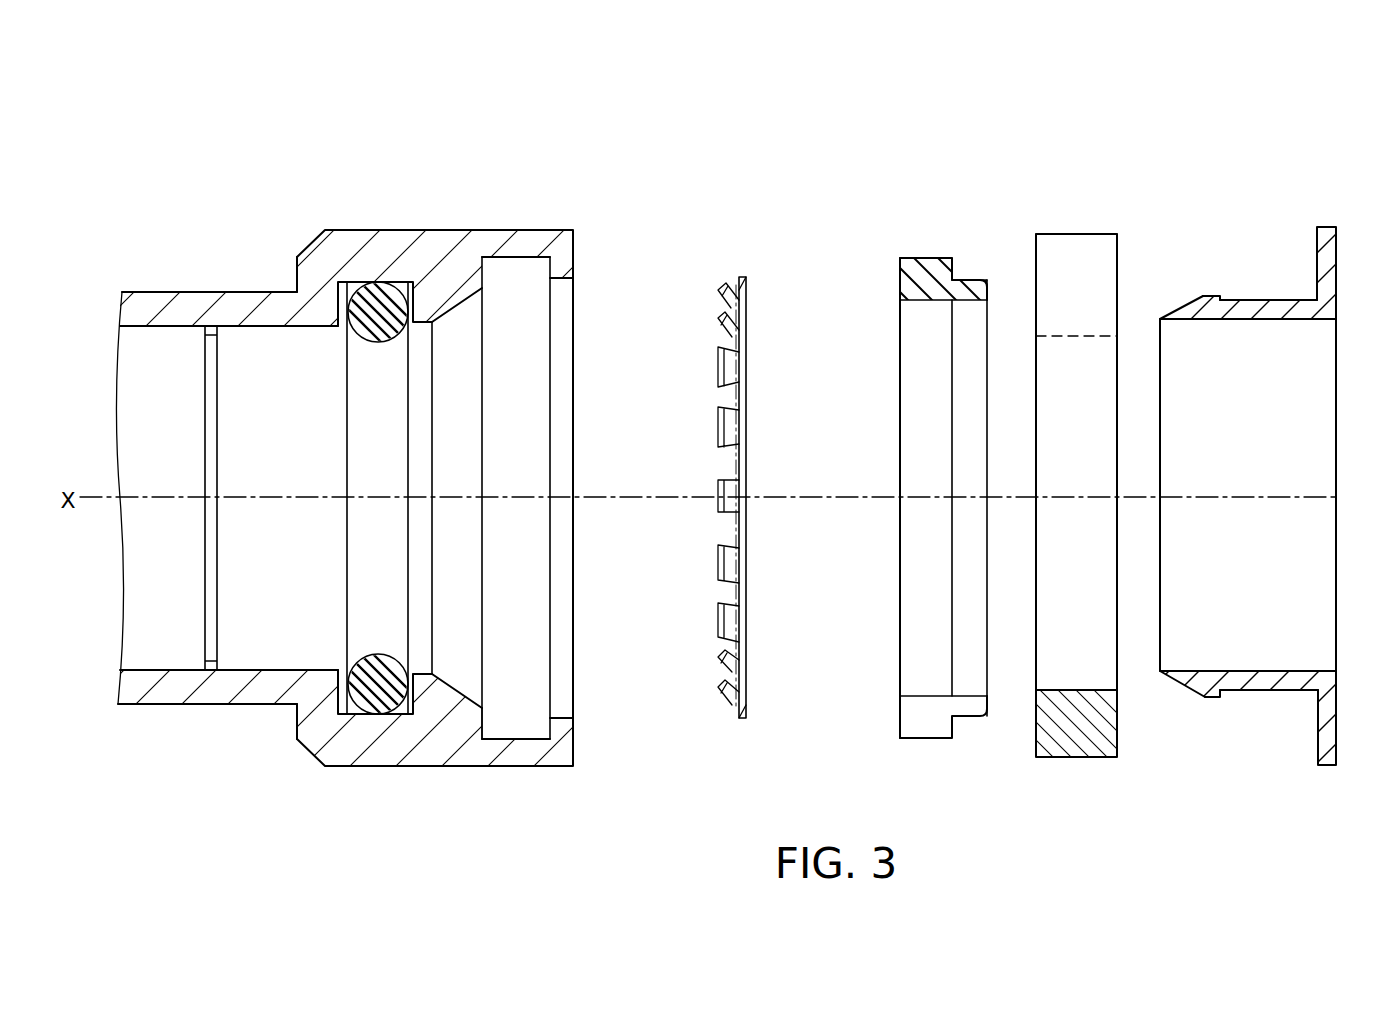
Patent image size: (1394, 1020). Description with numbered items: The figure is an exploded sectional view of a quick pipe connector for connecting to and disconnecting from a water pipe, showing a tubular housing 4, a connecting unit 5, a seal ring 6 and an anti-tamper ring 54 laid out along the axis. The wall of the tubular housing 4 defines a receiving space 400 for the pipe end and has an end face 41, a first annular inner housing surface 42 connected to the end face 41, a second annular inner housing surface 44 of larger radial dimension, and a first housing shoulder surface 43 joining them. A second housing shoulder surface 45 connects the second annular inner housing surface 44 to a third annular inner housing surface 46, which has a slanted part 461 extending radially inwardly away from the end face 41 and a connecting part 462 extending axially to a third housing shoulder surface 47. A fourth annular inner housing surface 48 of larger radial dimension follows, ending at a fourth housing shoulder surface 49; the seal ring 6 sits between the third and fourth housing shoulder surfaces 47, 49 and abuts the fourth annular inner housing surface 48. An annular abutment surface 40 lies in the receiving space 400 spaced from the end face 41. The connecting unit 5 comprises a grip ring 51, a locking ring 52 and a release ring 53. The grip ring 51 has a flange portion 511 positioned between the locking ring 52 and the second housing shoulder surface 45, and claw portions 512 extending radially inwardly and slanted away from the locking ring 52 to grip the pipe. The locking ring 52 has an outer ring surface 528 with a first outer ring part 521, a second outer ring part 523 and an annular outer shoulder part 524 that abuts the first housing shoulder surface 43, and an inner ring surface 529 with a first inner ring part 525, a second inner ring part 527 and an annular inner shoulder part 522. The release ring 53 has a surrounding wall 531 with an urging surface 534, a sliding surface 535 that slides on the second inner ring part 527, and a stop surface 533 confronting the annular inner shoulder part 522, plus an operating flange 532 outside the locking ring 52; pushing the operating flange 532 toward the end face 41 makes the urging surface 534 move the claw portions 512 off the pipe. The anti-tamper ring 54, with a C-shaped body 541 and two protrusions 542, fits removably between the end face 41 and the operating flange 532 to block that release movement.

The tubular housing 4 is at (540, 488).
The annular abutment surface 40 is at (227, 327).
The fourth housing shoulder surface 49 is at (340, 297).
The fourth annular inner housing surface 48 is at (352, 283).
The third housing shoulder surface 47 is at (401, 292).
The third annular inner housing surface 46 is at (434, 318).
The second housing shoulder surface 45 is at (448, 296).
The second annular inner housing surface 44 is at (505, 255).
The first housing shoulder surface 43 is at (551, 268).
The first annular inner housing surface 42 is at (560, 277).
The end face 41 is at (575, 263).
The receiving space 400 is at (528, 447).
The slanted part 461 is at (462, 725).
The connecting part 462 is at (438, 705).
The seal ring 6 is at (367, 712).
The grip ring 51 is at (688, 466).
The flange portion 511 is at (739, 280).
The claw portions 512 is at (718, 318).
The connecting unit 5 is at (1037, 500).
The locking ring 52 is at (1077, 429).
The first outer ring part 521 is at (899, 256).
The annular inner shoulder part 522 is at (964, 272).
The second outer ring part 523 is at (986, 285).
The annular outer shoulder part 524 is at (950, 262).
The first inner ring part 525 is at (900, 292).
The second inner ring part 527 is at (960, 302).
The outer ring surface 528 is at (932, 254).
The inner ring surface 529 is at (929, 307).
The anti-tamper ring 54 is at (1069, 517).
The C-shaped body 541 is at (1097, 722).
The protrusions 542 is at (1089, 247).
The release ring 53 is at (1037, 437).
The surrounding wall 531 is at (1262, 294).
The operating flange 532 is at (1336, 258).
The stop surface 533 is at (1218, 297).
The urging surface 534 is at (1167, 310).
The sliding surface 535 is at (1285, 299).